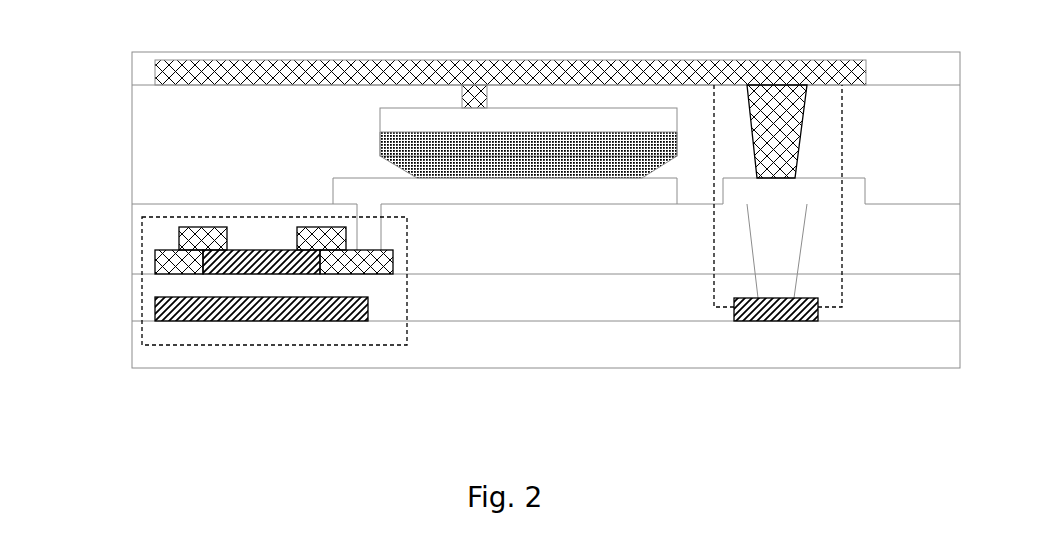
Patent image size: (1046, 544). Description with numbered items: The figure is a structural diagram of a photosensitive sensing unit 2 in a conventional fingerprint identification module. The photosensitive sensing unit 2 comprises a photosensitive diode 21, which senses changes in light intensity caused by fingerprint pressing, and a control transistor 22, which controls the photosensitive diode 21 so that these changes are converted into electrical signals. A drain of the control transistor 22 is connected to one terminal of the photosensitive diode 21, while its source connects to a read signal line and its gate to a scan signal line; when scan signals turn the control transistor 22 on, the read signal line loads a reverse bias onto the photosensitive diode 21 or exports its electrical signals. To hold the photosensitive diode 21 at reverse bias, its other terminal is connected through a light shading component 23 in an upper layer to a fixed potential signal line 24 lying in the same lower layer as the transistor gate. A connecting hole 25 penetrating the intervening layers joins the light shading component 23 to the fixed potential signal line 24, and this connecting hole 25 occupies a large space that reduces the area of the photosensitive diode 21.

The photosensitive sensing unit 2 is at (409, 280).
The photosensitive diode 21 is at (545, 166).
The control transistor 22 is at (274, 316).
The light shading component 23 is at (155, 72).
The fixed potential signal line 24 is at (773, 321).
The connecting hole 25 is at (842, 307).